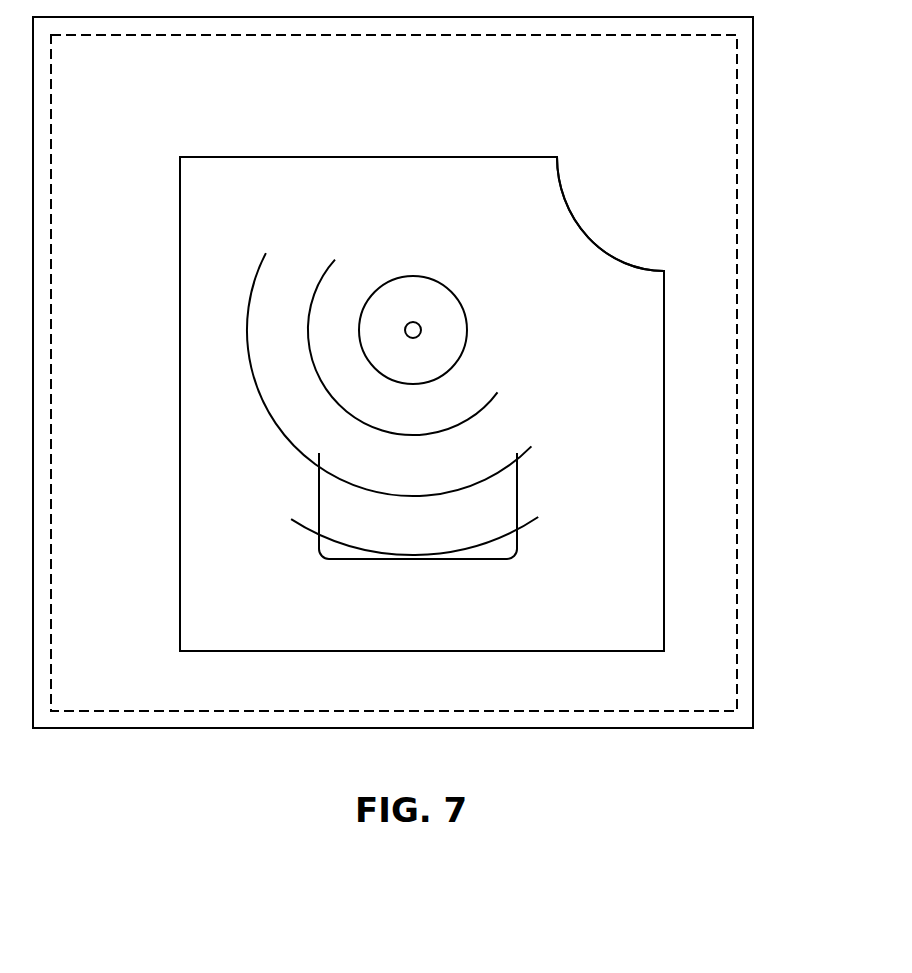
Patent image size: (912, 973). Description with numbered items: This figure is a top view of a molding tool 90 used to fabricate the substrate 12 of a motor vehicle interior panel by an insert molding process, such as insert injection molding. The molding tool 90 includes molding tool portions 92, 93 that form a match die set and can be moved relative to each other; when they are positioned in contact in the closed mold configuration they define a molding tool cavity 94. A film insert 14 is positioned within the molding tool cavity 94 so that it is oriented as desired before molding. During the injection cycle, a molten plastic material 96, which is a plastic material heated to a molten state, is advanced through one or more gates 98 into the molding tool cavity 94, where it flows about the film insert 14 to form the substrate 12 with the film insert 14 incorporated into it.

The molding tool 90 is at (742, 117).
The molding tool portion 93 is at (738, 278).
The molding tool portion 92 is at (740, 437).
The substrate 12 is at (645, 623).
The molding tool cavity 94 is at (622, 221).
The molten plastic material 96 is at (459, 358).
The gate 98 is at (419, 324).
The film insert 14 is at (519, 547).